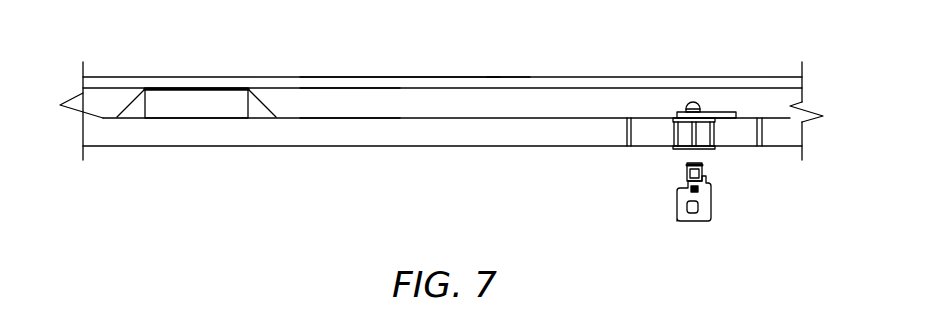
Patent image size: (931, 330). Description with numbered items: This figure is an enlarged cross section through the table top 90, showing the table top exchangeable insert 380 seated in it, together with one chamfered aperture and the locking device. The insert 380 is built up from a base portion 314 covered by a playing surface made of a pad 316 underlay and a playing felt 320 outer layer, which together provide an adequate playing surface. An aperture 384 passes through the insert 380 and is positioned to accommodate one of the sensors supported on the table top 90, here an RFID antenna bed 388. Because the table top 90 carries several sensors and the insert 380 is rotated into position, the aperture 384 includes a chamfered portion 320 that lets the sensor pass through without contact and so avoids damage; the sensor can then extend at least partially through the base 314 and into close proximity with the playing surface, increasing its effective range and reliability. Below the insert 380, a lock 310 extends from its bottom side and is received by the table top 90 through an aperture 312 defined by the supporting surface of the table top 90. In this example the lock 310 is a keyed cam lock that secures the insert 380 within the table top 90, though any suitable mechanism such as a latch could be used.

The table top 90 is at (475, 140).
The lock 310 is at (678, 152).
The aperture 312 is at (762, 148).
The base portion 314 is at (325, 102).
The pad 316 is at (407, 82).
The chamfered portion 320 is at (135, 105).
The table top exchangeable insert 380 is at (565, 107).
The aperture 384 is at (230, 105).
The RFID antenna bed 388 is at (195, 87).